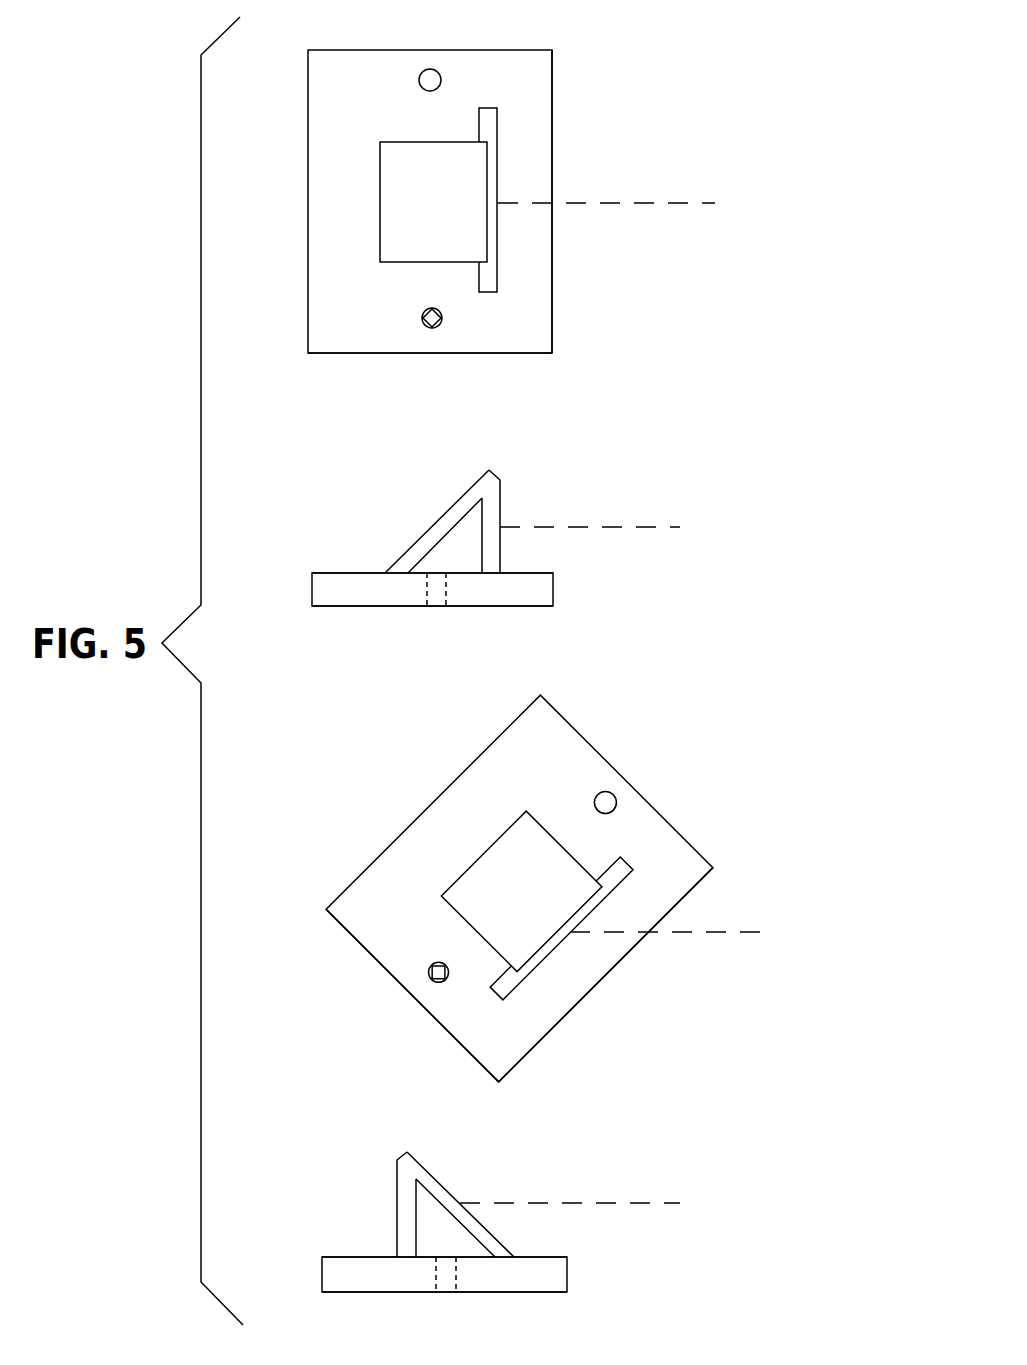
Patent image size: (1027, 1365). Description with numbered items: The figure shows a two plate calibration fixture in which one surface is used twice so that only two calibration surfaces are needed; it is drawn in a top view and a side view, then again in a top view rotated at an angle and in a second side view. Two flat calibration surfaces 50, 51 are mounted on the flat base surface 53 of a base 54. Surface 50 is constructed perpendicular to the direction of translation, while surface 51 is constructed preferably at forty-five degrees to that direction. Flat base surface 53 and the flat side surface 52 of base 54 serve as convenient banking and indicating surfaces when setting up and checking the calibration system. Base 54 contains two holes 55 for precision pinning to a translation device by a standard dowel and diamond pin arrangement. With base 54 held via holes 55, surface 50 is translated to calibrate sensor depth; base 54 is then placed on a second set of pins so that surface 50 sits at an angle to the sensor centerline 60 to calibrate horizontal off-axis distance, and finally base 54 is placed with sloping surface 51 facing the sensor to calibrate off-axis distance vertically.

The flat calibration surface 50 is at (497, 148).
The sloping calibration surface 51 is at (408, 203).
The flat side surface 52 is at (505, 353).
The flat base surface 53 is at (537, 306).
The base 54 is at (552, 265).
The holes 55 is at (441, 78).
The sensor centerline 60 is at (627, 202).